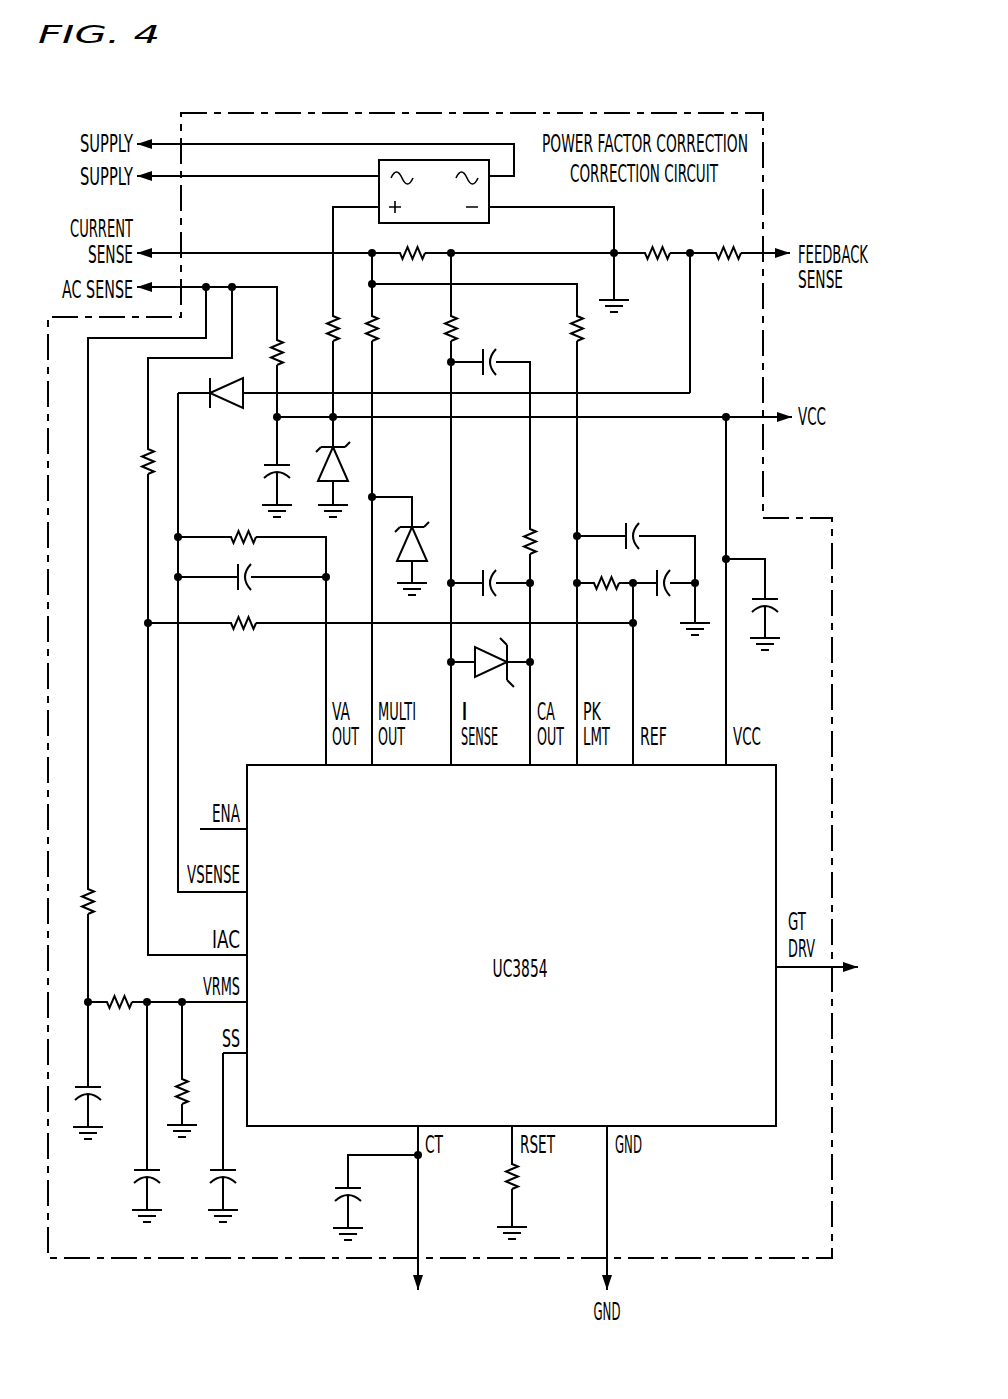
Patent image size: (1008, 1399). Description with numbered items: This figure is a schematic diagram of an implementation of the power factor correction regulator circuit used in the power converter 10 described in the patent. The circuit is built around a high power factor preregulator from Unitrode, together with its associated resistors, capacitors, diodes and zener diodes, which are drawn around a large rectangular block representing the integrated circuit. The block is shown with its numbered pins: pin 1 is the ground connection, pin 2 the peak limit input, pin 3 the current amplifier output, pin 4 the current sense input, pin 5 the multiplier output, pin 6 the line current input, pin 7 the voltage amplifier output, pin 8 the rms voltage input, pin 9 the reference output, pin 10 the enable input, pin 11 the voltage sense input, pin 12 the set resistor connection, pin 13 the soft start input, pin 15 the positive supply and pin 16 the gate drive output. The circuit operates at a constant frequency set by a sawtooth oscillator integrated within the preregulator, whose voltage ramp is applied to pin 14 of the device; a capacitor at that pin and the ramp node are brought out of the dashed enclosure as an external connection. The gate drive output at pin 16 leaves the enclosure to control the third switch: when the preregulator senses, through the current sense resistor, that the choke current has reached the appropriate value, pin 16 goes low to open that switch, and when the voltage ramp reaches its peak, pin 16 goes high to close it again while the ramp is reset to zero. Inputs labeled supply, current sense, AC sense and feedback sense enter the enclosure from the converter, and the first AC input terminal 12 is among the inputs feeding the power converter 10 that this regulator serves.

The GND pin of UC3854 1 is at (607, 1125).
The PK LMT pin of UC3854 2 is at (577, 772).
The CA OUT pin of UC3854 3 is at (530, 772).
The I SENSE pin of UC3854 4 is at (451, 772).
The MULTI OUT pin of UC3854 5 is at (372, 772).
The IAC pin of UC3854 6 is at (208, 957).
The VA OUT pin of UC3854 7 is at (327, 772).
The VRMS pin of UC3854 8 is at (225, 1004).
The REF pin of UC3854 9 is at (633, 772).
The power converter 10 is at (240, 830).
The VSENSE pin of UC3854 11 is at (229, 892).
The input terminal AC1 12 is at (512, 1126).
The SS pin of UC3854 13 is at (251, 1057).
The pin 14 of the UC3854 14 is at (381, 1208).
The VCC pin of UC3854 15 is at (727, 772).
The pin 16 of the UC3854 16 is at (815, 969).